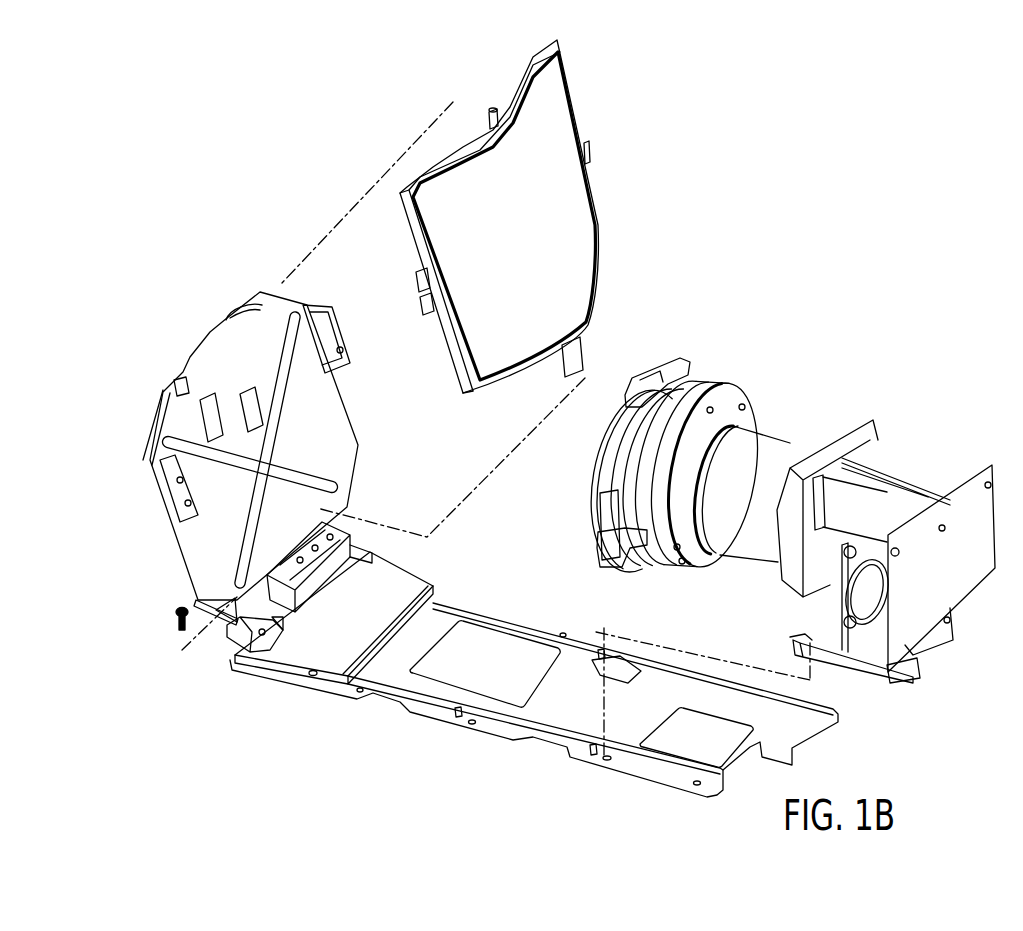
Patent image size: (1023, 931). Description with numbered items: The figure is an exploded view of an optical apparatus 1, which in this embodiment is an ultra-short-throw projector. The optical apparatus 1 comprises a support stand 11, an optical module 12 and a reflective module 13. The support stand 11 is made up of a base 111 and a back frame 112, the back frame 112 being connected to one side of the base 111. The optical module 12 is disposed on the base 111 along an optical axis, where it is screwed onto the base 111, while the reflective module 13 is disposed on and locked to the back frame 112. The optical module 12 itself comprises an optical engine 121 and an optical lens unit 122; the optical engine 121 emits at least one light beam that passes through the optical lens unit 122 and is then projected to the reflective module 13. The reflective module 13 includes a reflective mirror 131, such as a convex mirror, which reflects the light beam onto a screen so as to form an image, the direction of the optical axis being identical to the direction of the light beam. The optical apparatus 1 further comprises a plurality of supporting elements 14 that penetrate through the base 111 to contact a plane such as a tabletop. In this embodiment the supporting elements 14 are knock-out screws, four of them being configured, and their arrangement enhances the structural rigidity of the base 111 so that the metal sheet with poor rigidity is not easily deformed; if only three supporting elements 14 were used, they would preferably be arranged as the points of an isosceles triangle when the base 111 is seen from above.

The optical apparatus 1 is at (815, 200).
The support stand 11 is at (90, 585).
The base 111 is at (300, 670).
The back frame 112 is at (185, 530).
The optical module 12 is at (968, 370).
The optical engine 121 is at (887, 483).
The optical lens unit 122 is at (748, 442).
The reflective module 13 is at (586, 112).
The reflective mirror 131 is at (570, 222).
The supporting elements 14 is at (603, 628).